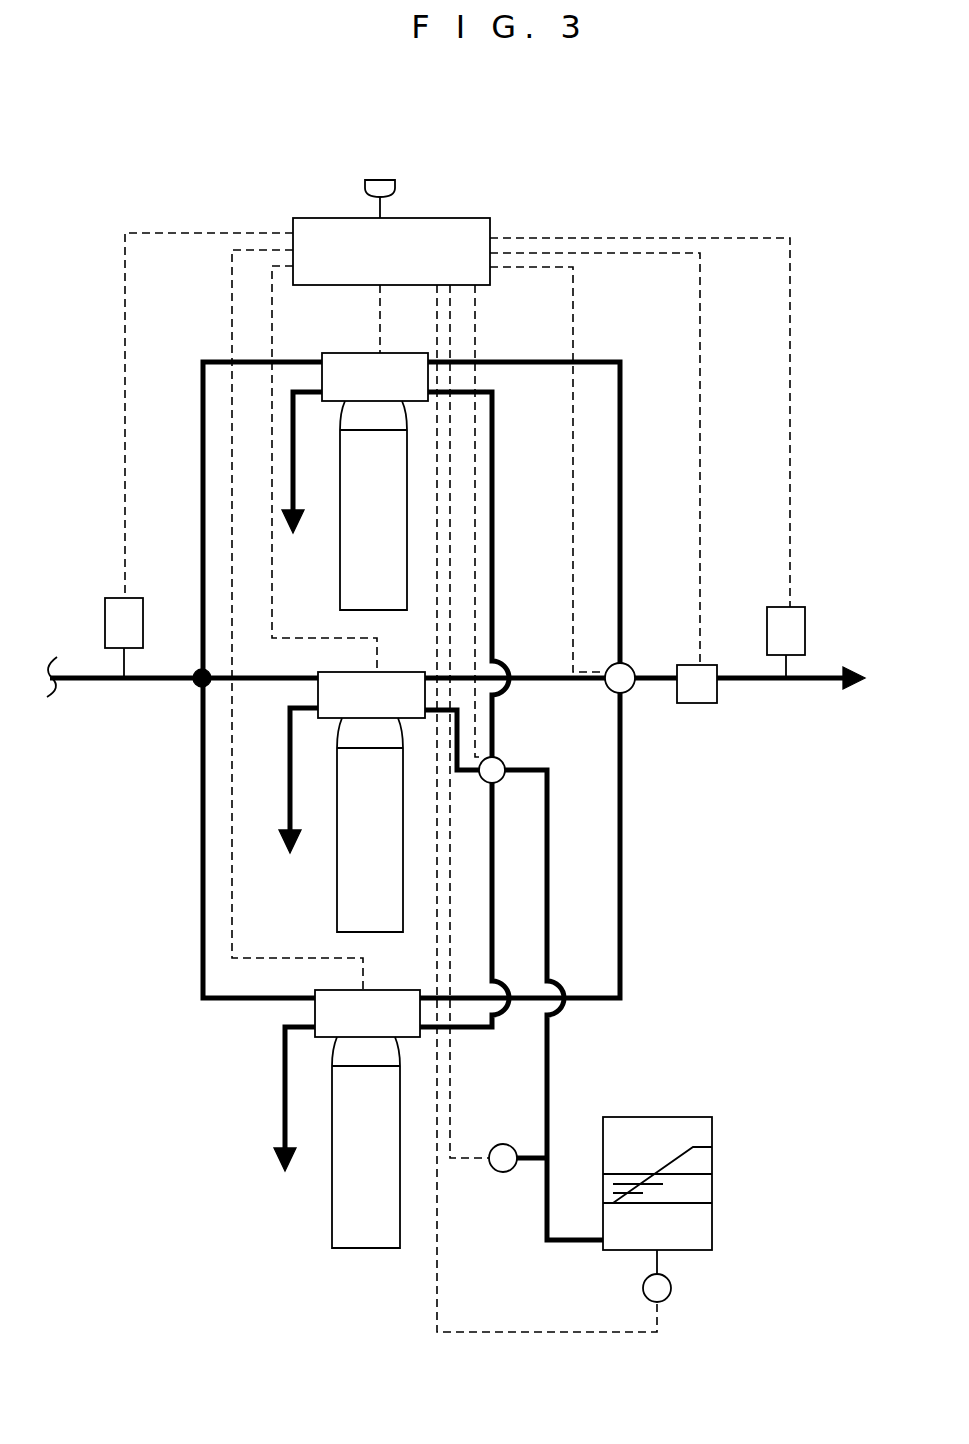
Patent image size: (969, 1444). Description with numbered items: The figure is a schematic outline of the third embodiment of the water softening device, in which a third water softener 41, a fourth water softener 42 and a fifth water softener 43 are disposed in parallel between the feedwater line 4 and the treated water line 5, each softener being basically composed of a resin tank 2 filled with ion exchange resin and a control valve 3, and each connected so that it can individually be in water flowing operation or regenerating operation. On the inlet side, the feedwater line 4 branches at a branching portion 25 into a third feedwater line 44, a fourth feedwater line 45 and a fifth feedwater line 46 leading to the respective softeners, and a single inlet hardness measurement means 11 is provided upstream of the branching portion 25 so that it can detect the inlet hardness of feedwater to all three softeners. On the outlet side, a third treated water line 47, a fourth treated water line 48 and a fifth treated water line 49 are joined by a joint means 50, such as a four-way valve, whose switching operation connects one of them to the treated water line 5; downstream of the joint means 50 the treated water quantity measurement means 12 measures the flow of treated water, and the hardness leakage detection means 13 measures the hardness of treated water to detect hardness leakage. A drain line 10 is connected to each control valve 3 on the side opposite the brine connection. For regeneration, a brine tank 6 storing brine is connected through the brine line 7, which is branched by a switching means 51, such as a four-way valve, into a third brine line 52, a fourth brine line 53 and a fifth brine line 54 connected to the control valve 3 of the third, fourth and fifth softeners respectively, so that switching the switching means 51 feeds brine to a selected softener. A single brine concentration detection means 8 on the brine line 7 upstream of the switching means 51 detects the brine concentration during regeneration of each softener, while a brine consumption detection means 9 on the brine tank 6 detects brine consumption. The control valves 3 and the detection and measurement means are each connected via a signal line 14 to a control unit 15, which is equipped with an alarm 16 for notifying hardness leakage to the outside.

The resin tank 2 is at (350, 585).
The control valve 3 is at (398, 368).
The feedwater line 4 is at (87, 680).
The treated water line 5 is at (753, 681).
The brine tank 6 is at (693, 1233).
The brine line 7 is at (547, 1060).
The brine concentration detection means 8 is at (503, 1172).
The brine consumption detection means 9 is at (672, 1288).
The drain line 10 is at (294, 479).
The inlet hardness measurement means 11 is at (108, 612).
The treated water quantity measurement means 12 is at (697, 694).
The hardness leakage detection means 13 is at (805, 632).
The signal line 14 is at (282, 265).
The control unit 15 is at (465, 218).
The alarm 16 is at (384, 182).
The branching portion 25 is at (195, 688).
The third water softener 41 is at (360, 336).
The fourth water softener 42 is at (403, 668).
The fifth water softener 43 is at (381, 981).
The third feedwater line 44 is at (203, 458).
The fourth feedwater line 45 is at (258, 683).
The fifth feedwater line 46 is at (203, 885).
The third treated water line 47 is at (622, 424).
The fourth treated water line 48 is at (538, 675).
The fifth treated water line 49 is at (622, 918).
The joint means 50 is at (630, 673).
The switching means 51 is at (500, 764).
The third brine line 52 is at (494, 470).
The fourth brine line 53 is at (460, 785).
The fifth brine line 54 is at (473, 1032).